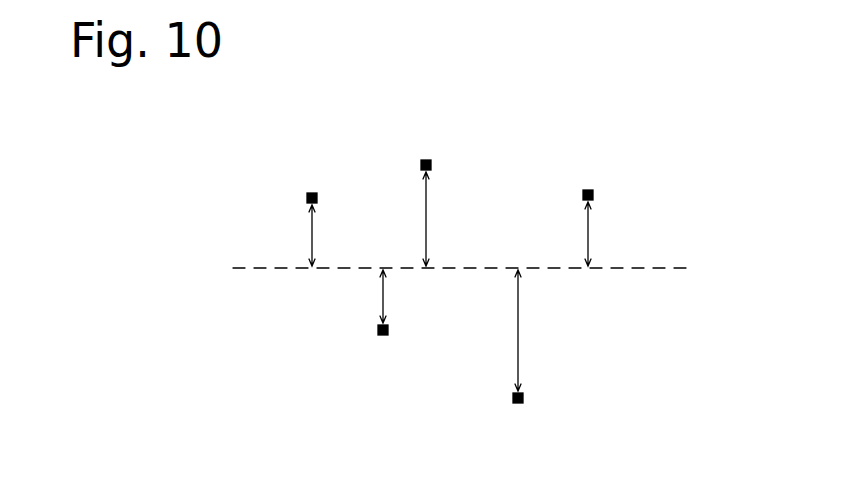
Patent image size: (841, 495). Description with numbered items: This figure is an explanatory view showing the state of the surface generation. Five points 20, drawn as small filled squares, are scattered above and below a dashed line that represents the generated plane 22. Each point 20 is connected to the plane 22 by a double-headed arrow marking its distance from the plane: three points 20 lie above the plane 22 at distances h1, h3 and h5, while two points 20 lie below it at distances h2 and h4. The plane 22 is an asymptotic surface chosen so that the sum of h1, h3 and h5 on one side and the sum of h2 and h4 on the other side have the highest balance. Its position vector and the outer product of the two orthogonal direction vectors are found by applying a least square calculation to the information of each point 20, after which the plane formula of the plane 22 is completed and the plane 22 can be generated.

The point 20 is at (318, 193).
The plane 22 is at (656, 270).
The distance h1 is at (311, 232).
The distance h2 is at (382, 299).
The distance h3 is at (425, 222).
The distance h4 is at (517, 310).
The distance h5 is at (587, 237).